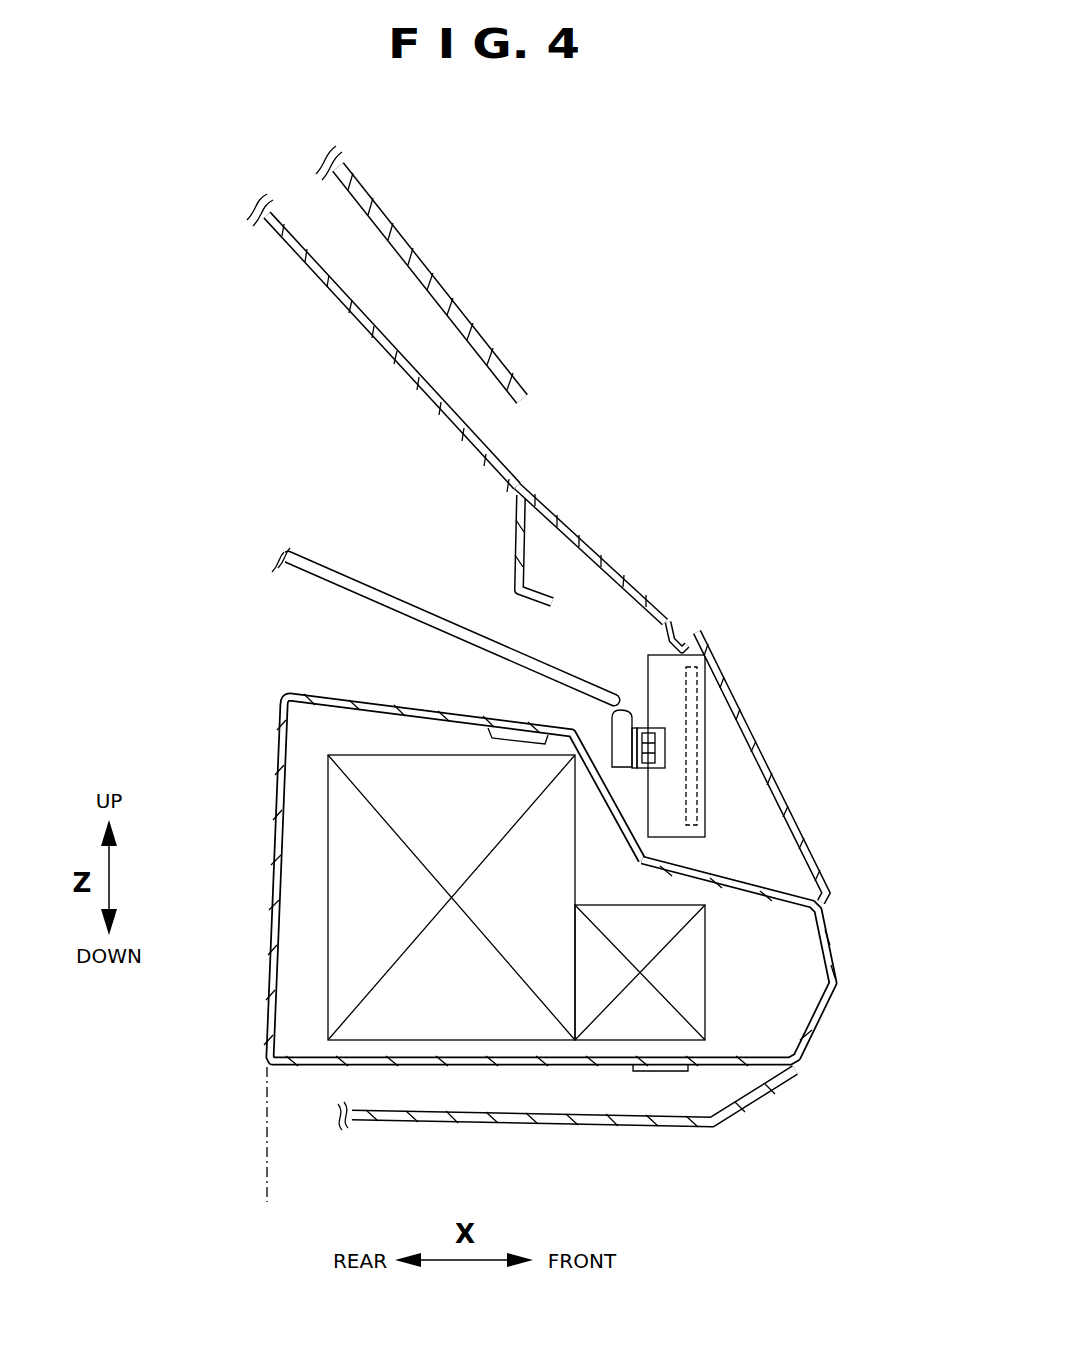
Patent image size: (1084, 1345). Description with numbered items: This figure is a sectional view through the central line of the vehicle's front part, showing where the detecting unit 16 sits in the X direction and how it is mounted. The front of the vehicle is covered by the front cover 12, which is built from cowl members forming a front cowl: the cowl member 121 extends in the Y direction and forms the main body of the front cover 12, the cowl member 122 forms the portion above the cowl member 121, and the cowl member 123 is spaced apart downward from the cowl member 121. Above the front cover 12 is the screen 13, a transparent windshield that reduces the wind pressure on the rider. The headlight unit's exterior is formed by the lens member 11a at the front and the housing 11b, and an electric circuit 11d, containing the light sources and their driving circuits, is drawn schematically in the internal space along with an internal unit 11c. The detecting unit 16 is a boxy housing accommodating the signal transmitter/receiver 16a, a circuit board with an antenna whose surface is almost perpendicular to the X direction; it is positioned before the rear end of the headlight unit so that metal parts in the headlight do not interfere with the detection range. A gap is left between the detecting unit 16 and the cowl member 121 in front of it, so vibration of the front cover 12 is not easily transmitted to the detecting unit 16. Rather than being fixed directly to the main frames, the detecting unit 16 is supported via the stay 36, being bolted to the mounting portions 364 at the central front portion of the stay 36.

The lens member 11a is at (835, 945).
The housing 11b is at (280, 737).
The internal unit of housing 11c is at (328, 1000).
The electric circuit / rear end of headlight unit 11d is at (262, 1180).
The front cover 12 is at (580, 669).
The cowl member 121 is at (760, 730).
The cowl member 122 is at (617, 558).
The cowl member 123 is at (780, 1088).
The screen 13 is at (453, 290).
The detecting unit 16 is at (700, 655).
The signal transmitter/receiver 16a is at (705, 797).
The stay 36 is at (355, 578).
The mounting portion 364 is at (618, 735).